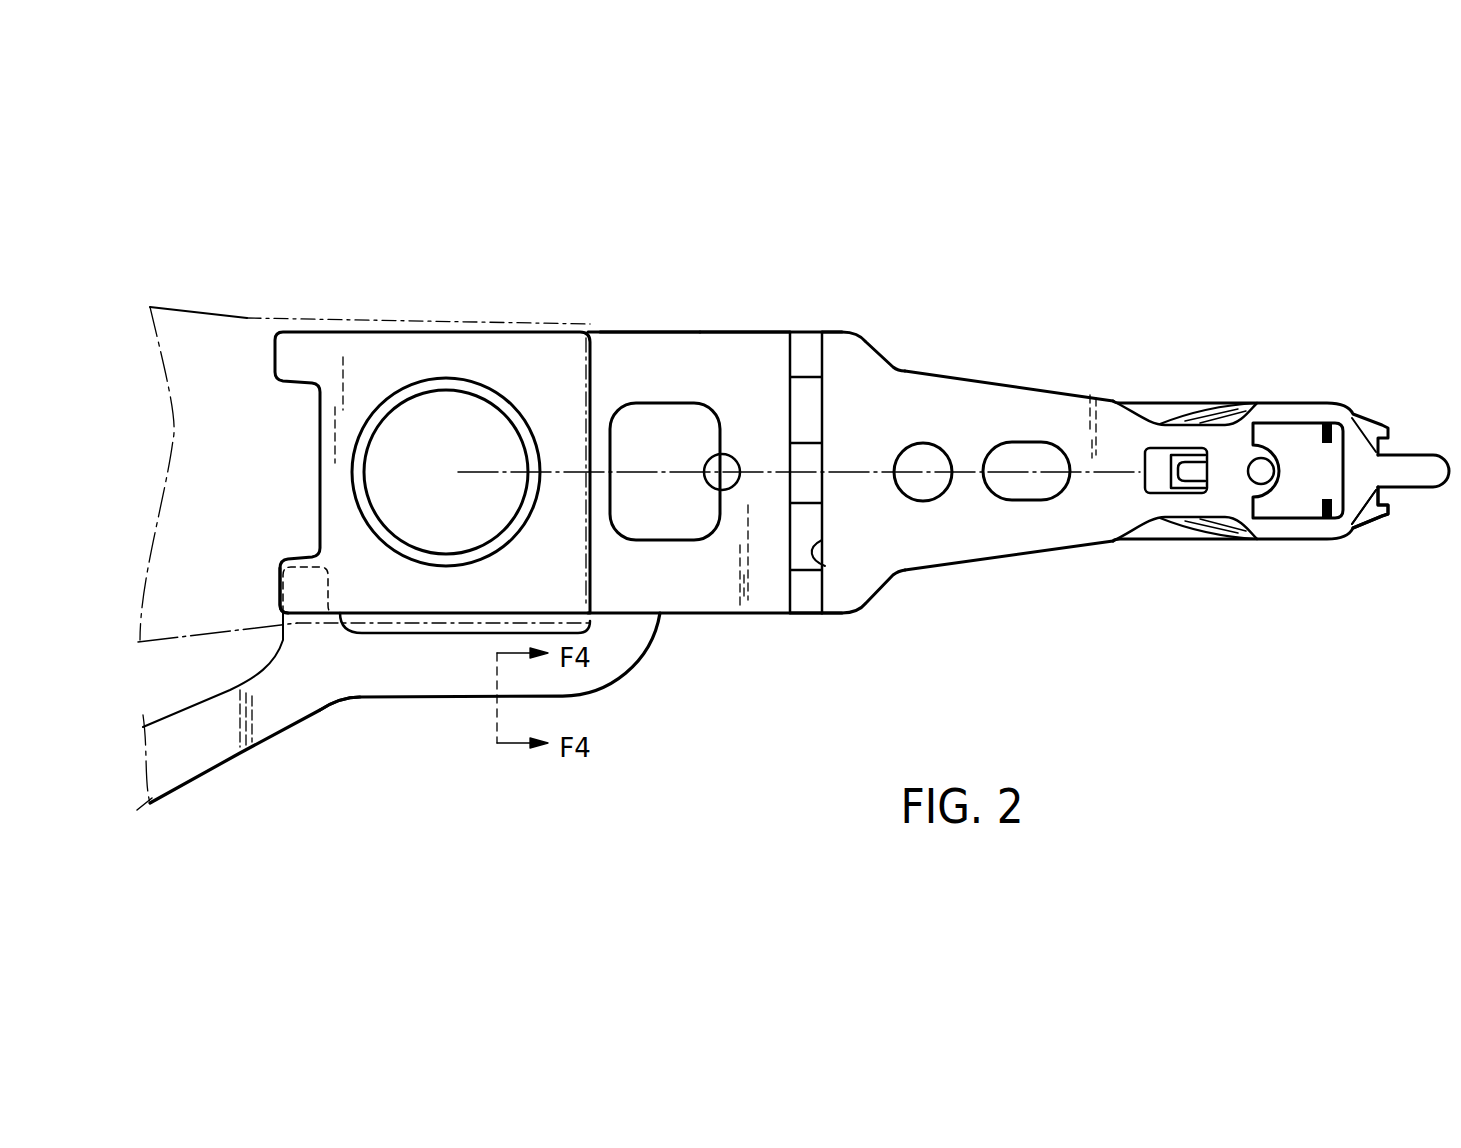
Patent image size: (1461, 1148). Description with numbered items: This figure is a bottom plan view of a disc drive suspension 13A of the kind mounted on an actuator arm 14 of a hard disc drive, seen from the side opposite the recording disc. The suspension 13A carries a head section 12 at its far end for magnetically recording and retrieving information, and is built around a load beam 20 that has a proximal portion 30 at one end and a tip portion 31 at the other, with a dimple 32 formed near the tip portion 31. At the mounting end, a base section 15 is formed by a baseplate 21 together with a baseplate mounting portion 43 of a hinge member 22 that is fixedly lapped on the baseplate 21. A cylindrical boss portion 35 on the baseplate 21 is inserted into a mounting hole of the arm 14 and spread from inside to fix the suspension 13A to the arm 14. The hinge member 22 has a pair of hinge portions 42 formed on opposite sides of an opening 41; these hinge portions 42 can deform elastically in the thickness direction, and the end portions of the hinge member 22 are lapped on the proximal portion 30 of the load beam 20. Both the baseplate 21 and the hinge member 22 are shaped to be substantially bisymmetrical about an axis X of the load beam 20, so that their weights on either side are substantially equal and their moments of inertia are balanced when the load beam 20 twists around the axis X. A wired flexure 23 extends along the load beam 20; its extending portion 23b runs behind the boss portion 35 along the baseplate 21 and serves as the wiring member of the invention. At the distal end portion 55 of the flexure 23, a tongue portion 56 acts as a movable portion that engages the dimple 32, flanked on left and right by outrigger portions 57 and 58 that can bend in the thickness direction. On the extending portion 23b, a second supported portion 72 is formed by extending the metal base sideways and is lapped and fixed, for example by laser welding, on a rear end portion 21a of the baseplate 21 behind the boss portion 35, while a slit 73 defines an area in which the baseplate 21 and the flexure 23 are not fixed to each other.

The head section 12 is at (1321, 374).
The disc drive suspension 13A is at (764, 262).
The arm 14 is at (229, 318).
The base section 15 is at (620, 315).
The load beam 20 is at (1038, 402).
The baseplate 21 is at (670, 338).
The rear end portion 21a is at (278, 599).
The hinge member 22 is at (790, 625).
The wired flexure 23 is at (660, 672).
The extending portion 23b is at (358, 690).
The proximal portion 30 is at (890, 380).
The tip portion 31 is at (1429, 465).
The dimple 32 is at (1262, 462).
The boss portion 35 is at (513, 427).
The opening 41 is at (825, 566).
The hinge portion 42 is at (807, 336).
The baseplate mounting portion 43 is at (367, 342).
The distal end portion 55 is at (1378, 520).
The tongue portion 56 is at (1307, 500).
The outrigger portion 57 is at (1190, 532).
The outrigger portion 58 is at (1190, 410).
The second supported portion 72 is at (305, 565).
The slit 73 is at (438, 634).
The axis X is at (484, 476).